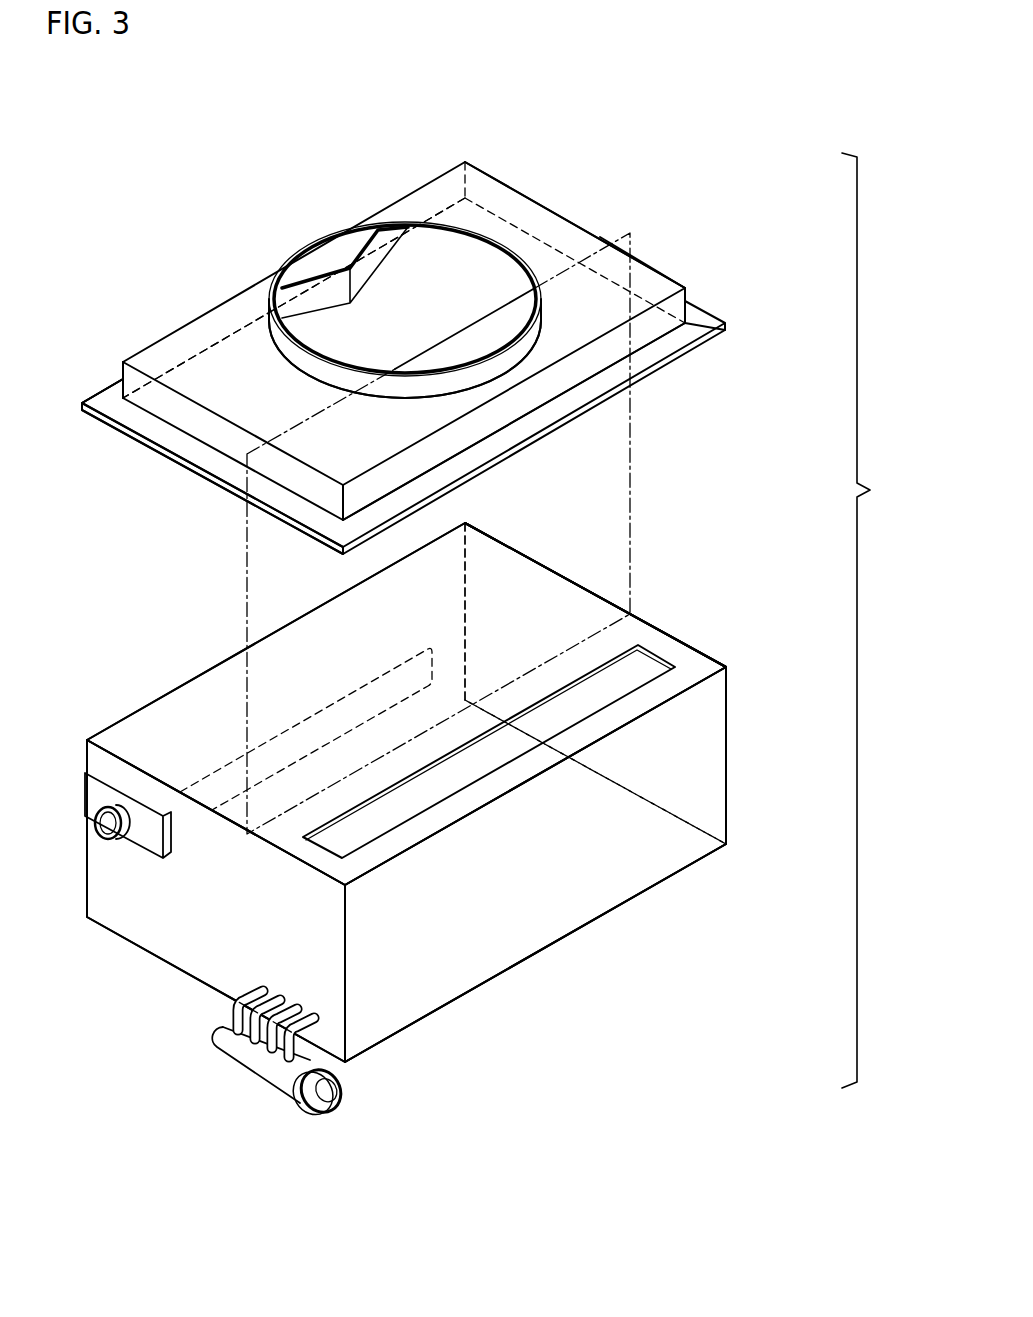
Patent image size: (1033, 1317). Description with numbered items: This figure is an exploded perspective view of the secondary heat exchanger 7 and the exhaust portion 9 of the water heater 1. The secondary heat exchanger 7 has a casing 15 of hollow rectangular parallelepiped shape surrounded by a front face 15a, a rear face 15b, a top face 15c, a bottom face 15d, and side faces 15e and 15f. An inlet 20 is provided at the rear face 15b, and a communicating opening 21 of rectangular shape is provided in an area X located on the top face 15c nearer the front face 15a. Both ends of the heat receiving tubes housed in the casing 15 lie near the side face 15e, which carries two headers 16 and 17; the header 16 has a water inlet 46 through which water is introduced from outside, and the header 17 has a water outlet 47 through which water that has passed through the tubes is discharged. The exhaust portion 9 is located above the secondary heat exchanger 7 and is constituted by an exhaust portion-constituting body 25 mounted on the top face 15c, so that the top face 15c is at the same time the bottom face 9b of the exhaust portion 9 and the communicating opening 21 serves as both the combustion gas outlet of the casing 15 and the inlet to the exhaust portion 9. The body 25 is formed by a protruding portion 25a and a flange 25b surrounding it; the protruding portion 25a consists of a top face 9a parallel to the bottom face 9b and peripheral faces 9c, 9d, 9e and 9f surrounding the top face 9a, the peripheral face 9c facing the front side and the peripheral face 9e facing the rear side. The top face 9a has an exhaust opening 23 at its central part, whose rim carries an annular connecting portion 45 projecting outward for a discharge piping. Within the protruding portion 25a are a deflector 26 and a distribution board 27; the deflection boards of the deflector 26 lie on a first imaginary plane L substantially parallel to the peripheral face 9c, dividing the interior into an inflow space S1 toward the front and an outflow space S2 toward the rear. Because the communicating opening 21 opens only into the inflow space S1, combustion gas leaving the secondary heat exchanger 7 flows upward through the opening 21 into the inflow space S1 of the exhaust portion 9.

The water heater 1 is at (867, 620).
The secondary heat exchanger 7 is at (660, 621).
The exhaust portion 9 is at (600, 175).
The top face 9a is at (635, 273).
The bottom face 9b is at (595, 592).
The peripheral face 9c is at (500, 420).
The peripheral face 9d is at (676, 270).
The peripheral face 9e is at (427, 203).
The peripheral face 9f is at (223, 440).
The casing 15 is at (582, 893).
The front face 15a is at (692, 767).
The rear face 15b is at (205, 725).
The top face 15c is at (488, 586).
The bottom face 15d is at (455, 930).
The side face 15e is at (182, 903).
The side face 15f is at (682, 727).
The header 16 is at (92, 805).
The header 17 is at (265, 1072).
The inlet 20 is at (398, 670).
The communicating opening 21 is at (655, 668).
The exhaust opening 23 is at (454, 236).
The exhaust portion-constituting body 25 is at (190, 258).
The protruding portion 25a is at (190, 342).
The flange 25b is at (108, 383).
The deflector 26 is at (428, 362).
The distribution board 27 is at (378, 266).
The connecting portion 45 is at (316, 370).
The water inlet 46 is at (98, 816).
The water outlet 47 is at (345, 1098).
The first imaginary plane L is at (638, 472).
The inflow space S1 is at (653, 283).
The outflow space S2 is at (568, 242).
The area X is at (698, 688).